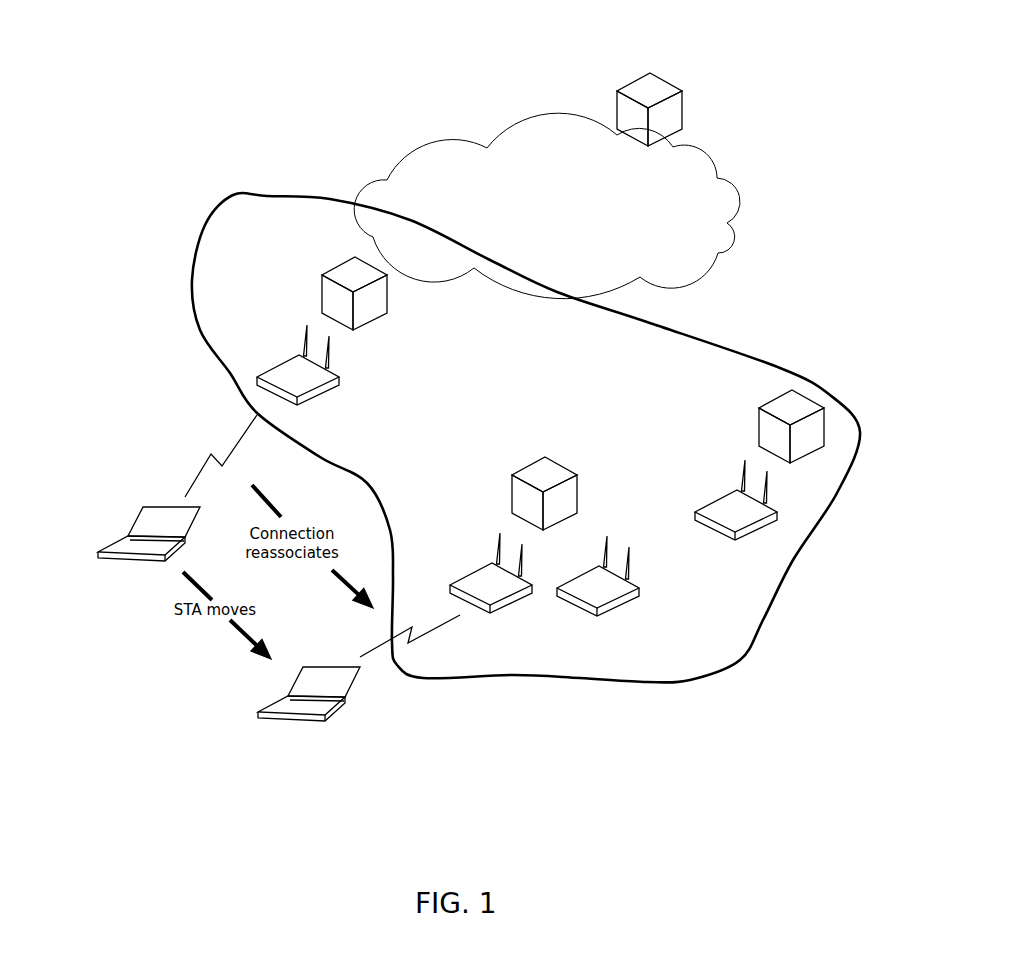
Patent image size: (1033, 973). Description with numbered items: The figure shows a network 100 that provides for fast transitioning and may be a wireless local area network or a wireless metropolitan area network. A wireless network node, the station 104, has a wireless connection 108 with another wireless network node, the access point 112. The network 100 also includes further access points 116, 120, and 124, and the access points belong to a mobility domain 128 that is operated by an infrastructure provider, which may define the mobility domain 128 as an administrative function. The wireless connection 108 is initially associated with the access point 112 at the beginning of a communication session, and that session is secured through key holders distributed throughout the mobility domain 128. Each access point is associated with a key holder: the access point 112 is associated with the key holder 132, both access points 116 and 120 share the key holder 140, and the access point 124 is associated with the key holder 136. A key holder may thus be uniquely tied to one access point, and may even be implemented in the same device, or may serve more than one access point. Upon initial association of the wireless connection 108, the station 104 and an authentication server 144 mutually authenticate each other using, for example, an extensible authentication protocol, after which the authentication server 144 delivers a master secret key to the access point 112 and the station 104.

The network 100 is at (186, 146).
The station 104 is at (113, 542).
The wireless connection 108 is at (212, 455).
The access point 112 is at (260, 368).
The access point 116 is at (493, 612).
The access point 120 is at (638, 592).
The access point 124 is at (733, 488).
The mobility domain 128 is at (767, 622).
The key holder 132 is at (390, 292).
The key holder 136 is at (775, 397).
The key holder 140 is at (532, 462).
The authentication server 144 is at (633, 85).